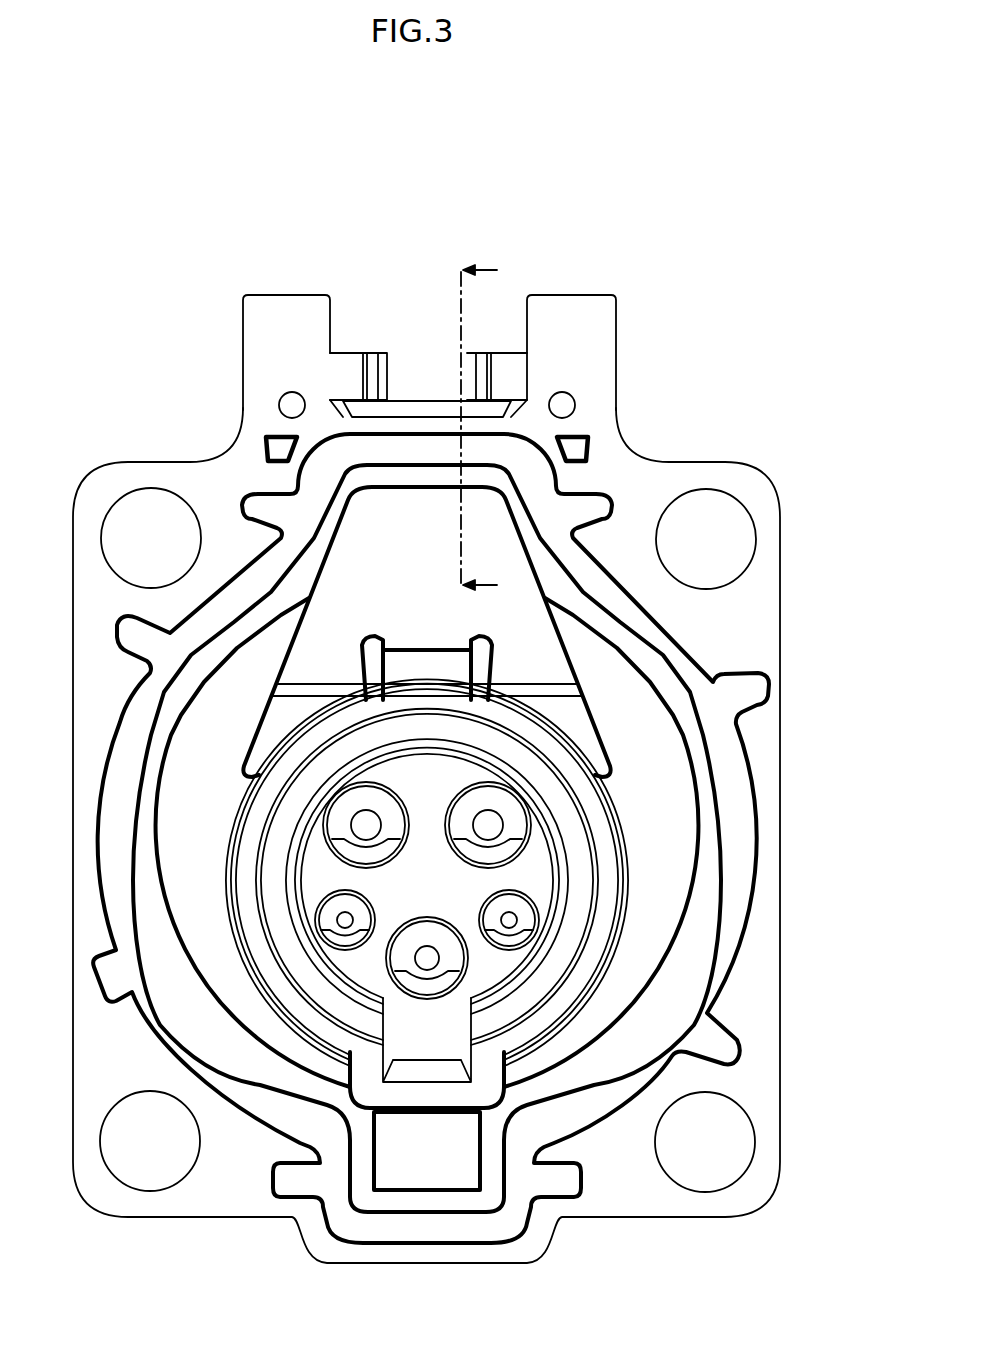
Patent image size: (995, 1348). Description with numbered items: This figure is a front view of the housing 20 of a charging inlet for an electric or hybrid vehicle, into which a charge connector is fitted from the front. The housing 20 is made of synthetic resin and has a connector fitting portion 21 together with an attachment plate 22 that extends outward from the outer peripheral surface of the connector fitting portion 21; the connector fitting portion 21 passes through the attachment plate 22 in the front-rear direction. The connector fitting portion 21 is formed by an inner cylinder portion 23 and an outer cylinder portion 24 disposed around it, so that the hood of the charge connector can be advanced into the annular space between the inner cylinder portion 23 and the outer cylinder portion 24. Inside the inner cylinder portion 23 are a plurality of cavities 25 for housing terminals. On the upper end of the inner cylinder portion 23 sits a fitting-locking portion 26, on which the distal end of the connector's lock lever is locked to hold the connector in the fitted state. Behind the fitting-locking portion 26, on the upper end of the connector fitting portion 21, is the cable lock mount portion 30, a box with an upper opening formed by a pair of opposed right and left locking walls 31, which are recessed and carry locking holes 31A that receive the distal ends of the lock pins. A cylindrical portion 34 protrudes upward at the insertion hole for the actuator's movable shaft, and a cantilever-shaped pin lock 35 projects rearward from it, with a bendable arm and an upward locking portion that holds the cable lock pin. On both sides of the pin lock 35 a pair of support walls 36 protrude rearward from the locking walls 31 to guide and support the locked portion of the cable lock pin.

The housing 20 is at (437, 203).
The connector fitting portion 21 is at (665, 878).
The attachment plate 22 is at (750, 605).
The inner cylinder portion 23 is at (605, 845).
The outer cylinder portion 24 is at (710, 838).
The cavities 25 is at (492, 826).
The fitting-locking portion 26 is at (435, 668).
The cable lock mount portion 30 is at (434, 331).
The locking walls 31 is at (275, 328).
The locking holes 31A is at (283, 406).
The cylindrical portion 34 is at (590, 455).
The pin lock 35 is at (430, 388).
The support walls 36 is at (350, 362).